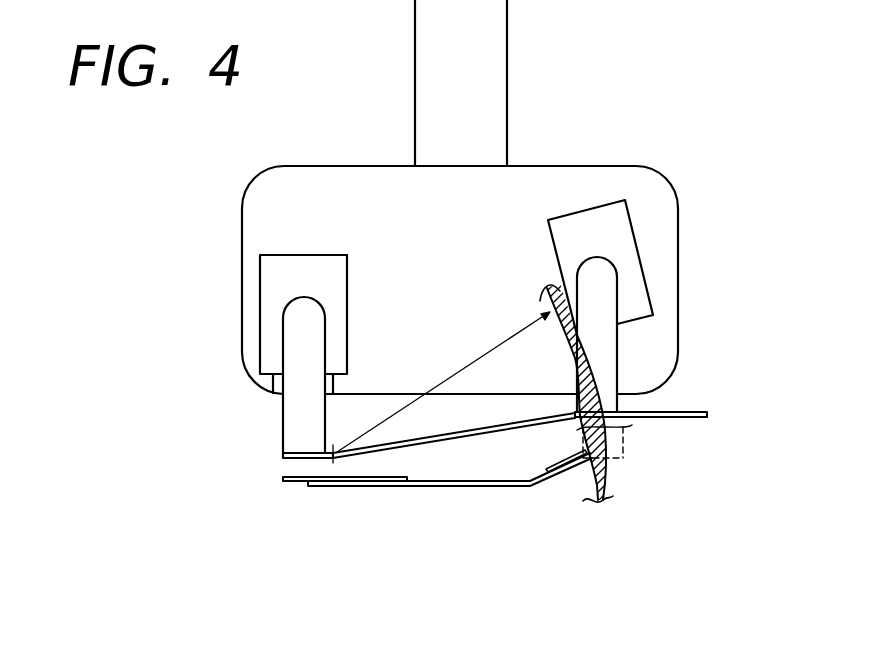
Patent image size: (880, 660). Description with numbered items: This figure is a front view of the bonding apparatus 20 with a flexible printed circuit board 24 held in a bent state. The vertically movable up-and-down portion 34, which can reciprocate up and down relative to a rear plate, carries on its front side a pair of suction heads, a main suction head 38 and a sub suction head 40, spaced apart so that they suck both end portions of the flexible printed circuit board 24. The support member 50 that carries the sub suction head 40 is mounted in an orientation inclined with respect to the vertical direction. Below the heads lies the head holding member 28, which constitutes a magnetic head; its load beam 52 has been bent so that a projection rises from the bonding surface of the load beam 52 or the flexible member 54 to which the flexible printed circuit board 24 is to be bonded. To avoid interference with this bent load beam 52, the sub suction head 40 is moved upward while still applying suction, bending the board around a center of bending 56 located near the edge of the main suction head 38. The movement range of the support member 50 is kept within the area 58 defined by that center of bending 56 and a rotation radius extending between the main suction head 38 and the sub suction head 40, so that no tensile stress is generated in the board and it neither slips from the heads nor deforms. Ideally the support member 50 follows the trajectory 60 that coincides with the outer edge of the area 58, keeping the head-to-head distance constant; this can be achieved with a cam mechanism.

The bonding apparatus 20 is at (635, 103).
The flexible printed circuit board 24 is at (695, 410).
The head holding member 28 is at (528, 495).
The up-and-down portion 34 is at (578, 180).
The main suction head 38 is at (290, 420).
The sub suction head 40 is at (610, 373).
The support member 50 is at (623, 238).
The load beam 52 is at (452, 488).
The flexible member 54 is at (295, 485).
The center of bending 56 is at (337, 450).
The area 58 is at (563, 480).
The trajectory 60 is at (588, 358).